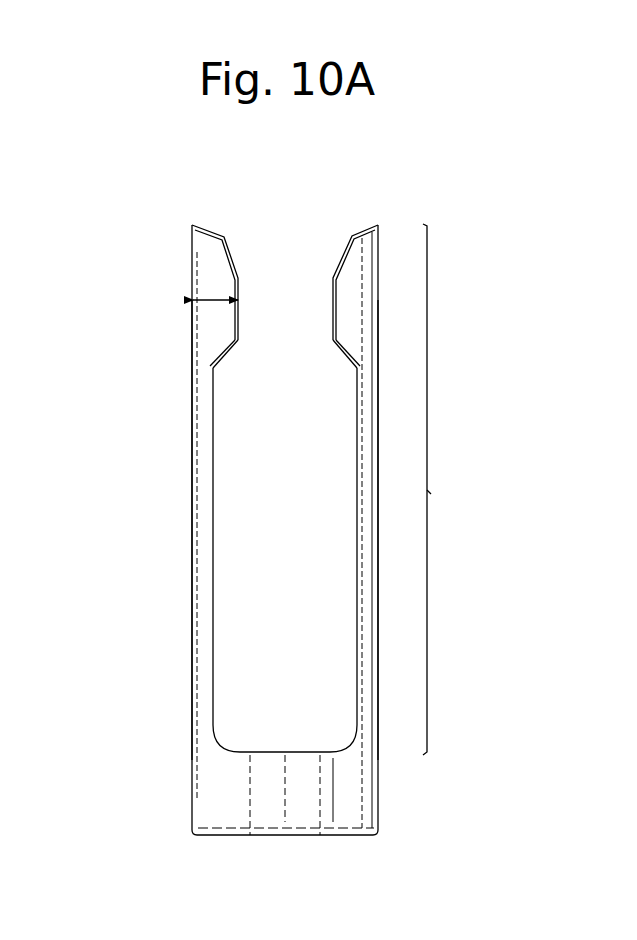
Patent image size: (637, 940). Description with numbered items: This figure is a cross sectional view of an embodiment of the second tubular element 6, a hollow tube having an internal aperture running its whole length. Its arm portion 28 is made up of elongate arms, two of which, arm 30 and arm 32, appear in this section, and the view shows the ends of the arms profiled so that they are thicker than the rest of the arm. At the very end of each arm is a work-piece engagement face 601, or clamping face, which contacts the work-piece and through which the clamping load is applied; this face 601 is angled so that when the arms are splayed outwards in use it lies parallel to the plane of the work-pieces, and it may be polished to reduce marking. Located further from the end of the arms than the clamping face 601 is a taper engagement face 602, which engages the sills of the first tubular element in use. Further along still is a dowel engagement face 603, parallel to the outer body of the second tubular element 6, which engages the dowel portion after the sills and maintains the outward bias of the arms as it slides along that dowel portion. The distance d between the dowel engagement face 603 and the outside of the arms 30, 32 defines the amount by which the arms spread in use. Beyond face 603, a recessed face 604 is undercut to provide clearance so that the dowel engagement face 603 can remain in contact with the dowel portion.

The second tubular element 6 is at (246, 494).
The arm portion 28 is at (447, 489).
The elongate arm 30 is at (196, 451).
The elongate arm 32 is at (367, 437).
The work-piece engagement face 601 is at (285, 247).
The taper engagement face 602 is at (336, 258).
The dowel engagement face 603 is at (332, 322).
The recessed face 604 is at (343, 362).
The distance d is at (215, 304).